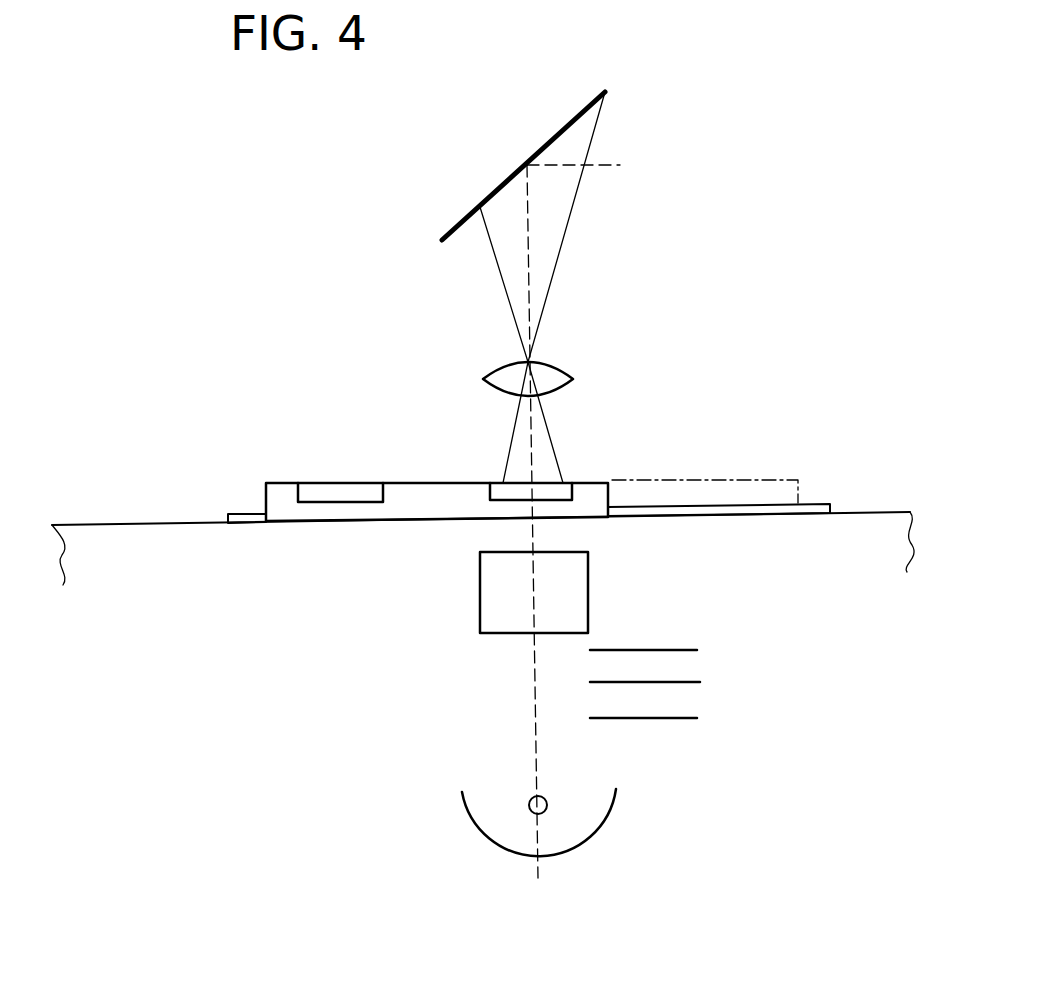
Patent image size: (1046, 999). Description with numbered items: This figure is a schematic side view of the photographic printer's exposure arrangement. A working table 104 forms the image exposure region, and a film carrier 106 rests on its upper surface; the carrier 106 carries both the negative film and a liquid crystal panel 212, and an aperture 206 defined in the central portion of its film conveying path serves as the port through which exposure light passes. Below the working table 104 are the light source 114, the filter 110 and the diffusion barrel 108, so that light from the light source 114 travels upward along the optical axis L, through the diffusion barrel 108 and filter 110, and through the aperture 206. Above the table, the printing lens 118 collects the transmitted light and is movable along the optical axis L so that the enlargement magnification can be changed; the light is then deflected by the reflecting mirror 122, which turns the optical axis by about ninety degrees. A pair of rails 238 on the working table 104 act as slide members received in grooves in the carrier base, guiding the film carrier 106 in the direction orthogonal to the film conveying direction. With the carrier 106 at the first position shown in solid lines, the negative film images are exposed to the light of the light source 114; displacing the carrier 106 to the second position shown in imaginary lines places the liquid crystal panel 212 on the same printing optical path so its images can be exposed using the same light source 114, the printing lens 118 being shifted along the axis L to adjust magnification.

The working table 104 is at (877, 512).
The film carrier 106 is at (266, 503).
The diffusion barrel 108 is at (588, 572).
The filter 110 is at (716, 640).
The light source 114 is at (638, 819).
The printing lens 118 is at (513, 362).
The reflecting mirror 122 is at (604, 92).
The aperture 206 is at (568, 483).
The liquid crystal panel 212 is at (320, 492).
The rails 238 is at (815, 503).
The optical axis L is at (530, 708).